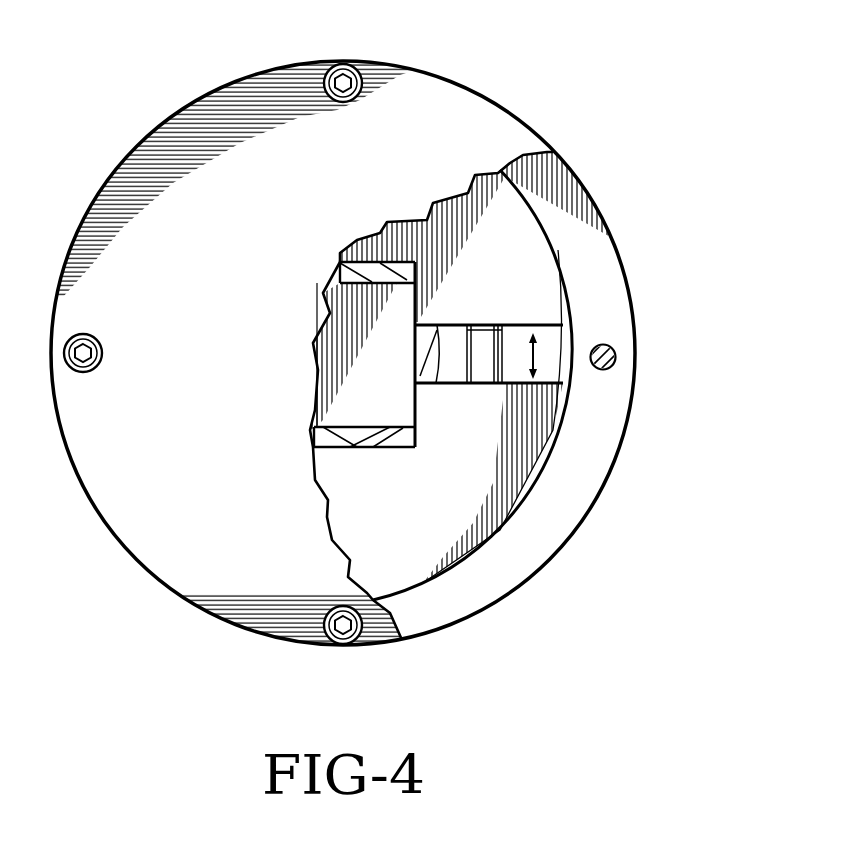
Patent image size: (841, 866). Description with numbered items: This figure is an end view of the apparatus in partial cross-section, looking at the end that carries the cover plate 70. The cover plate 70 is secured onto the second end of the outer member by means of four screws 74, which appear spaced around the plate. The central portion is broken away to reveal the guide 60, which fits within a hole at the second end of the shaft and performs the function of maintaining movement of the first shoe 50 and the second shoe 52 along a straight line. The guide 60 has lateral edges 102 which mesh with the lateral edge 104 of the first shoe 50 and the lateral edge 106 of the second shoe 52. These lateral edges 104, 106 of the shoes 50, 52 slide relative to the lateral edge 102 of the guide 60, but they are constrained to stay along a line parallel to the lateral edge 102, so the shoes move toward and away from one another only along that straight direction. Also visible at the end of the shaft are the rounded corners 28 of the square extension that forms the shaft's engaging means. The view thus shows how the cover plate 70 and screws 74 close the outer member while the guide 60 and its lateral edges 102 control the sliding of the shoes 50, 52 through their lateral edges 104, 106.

The cover plate 70 is at (443, 108).
The screws 74 is at (356, 68).
The guide 60 is at (372, 321).
The first shoe 50 is at (487, 237).
The second shoe 52 is at (515, 457).
The lateral edges 102 is at (412, 360).
The lateral edge 104 is at (416, 270).
The lateral edge 106 is at (416, 433).
The rounded corners 28 is at (372, 447).